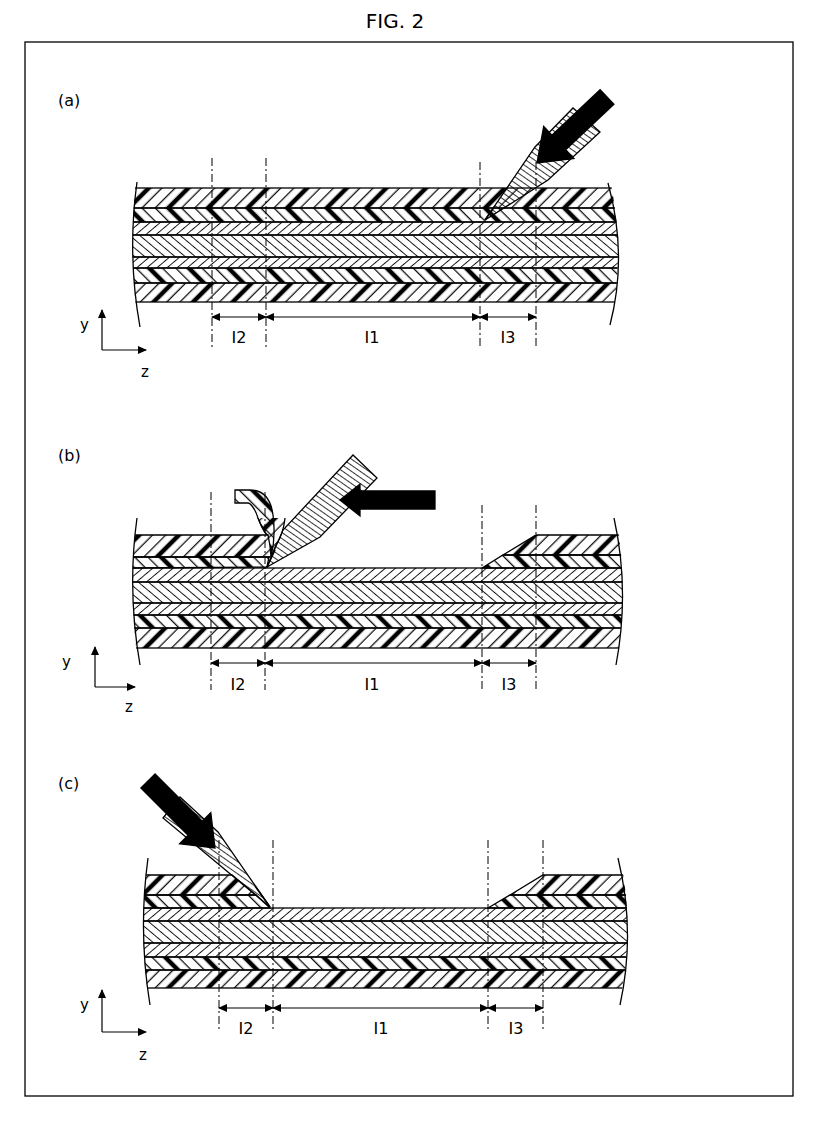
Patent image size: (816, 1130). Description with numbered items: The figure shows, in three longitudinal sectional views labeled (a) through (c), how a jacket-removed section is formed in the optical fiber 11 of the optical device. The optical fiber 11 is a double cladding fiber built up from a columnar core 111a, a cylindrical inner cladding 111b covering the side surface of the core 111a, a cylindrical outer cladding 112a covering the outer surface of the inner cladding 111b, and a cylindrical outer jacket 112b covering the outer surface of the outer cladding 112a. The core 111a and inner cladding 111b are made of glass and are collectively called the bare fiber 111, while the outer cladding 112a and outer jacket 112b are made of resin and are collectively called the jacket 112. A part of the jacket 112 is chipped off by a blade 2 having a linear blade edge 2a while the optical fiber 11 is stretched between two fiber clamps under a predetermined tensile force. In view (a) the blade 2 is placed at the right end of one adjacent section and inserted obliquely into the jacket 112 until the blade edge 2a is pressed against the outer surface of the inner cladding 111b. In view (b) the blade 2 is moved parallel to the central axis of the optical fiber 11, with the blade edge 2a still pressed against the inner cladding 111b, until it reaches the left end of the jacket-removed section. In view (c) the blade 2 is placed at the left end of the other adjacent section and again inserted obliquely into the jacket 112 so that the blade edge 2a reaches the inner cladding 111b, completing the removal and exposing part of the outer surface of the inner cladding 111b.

The blade 2 is at (545, 148).
The blade edge 2a is at (487, 215).
The optical fiber 11 is at (436, 561).
The bare fiber 111 is at (436, 589).
The core 111a is at (611, 246).
The inner cladding 111b is at (611, 229).
The jacket 112 is at (436, 586).
The outer cladding 112a is at (611, 215).
The outer jacket 112b is at (611, 193).